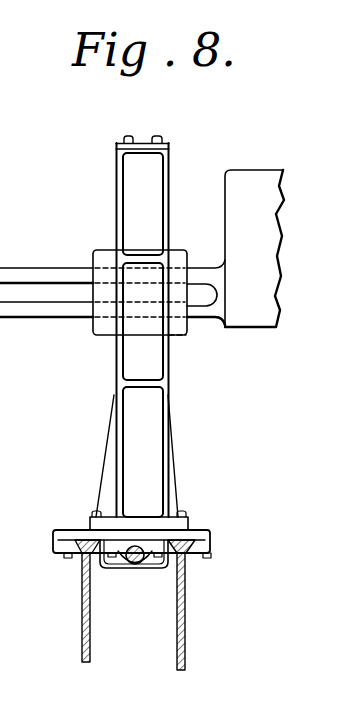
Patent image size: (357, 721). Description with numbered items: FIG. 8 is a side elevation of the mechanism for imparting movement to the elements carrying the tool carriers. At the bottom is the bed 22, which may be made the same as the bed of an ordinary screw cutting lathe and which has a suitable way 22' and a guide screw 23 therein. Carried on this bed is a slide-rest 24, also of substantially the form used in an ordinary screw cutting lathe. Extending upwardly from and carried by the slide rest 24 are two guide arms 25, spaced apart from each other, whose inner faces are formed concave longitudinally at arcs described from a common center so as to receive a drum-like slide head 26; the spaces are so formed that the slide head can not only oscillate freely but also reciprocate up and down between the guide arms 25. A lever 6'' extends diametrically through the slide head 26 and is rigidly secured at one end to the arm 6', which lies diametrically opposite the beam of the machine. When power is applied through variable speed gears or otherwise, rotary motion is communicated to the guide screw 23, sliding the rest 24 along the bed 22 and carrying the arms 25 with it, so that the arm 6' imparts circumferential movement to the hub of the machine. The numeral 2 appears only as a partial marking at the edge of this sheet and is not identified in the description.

The arm 6' is at (237, 248).
The lever 6'' is at (112, 304).
The slide head 26 is at (103, 252).
The guide arms 25 is at (152, 429).
The slide-rest 24 is at (210, 545).
The guide screw 23 is at (135, 566).
The bed 22 is at (147, 611).
The way 22' is at (151, 562).
The partial numeral 2 is at (1, 593).